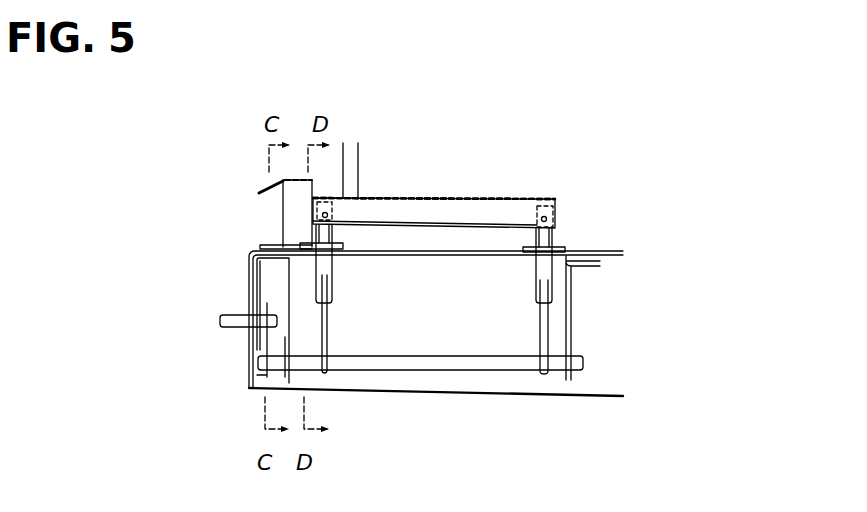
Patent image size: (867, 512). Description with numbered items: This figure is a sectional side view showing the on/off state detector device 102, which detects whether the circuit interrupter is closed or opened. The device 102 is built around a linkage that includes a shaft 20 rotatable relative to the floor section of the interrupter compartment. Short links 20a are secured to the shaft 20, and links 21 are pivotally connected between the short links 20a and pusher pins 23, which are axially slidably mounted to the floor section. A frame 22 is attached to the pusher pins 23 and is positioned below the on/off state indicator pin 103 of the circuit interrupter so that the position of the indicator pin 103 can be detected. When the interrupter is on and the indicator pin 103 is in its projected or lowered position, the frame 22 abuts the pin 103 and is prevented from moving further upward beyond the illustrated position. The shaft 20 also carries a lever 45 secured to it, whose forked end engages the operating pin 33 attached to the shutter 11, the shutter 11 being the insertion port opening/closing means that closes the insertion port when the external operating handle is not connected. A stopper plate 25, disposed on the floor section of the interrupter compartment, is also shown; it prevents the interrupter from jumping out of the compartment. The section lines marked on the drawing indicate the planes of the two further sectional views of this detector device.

The shutter 11 is at (250, 290).
The shaft 20 is at (445, 372).
The short links 20a is at (327, 372).
The links 21 is at (325, 332).
The frame 22 is at (440, 198).
The pusher pins 23 is at (328, 265).
The stopper plate 25 is at (287, 215).
The operating pin 33 is at (233, 312).
The lever 45 is at (255, 376).
The on/off state detector device 102 is at (538, 160).
The on/off state indicator pin 103 is at (358, 155).